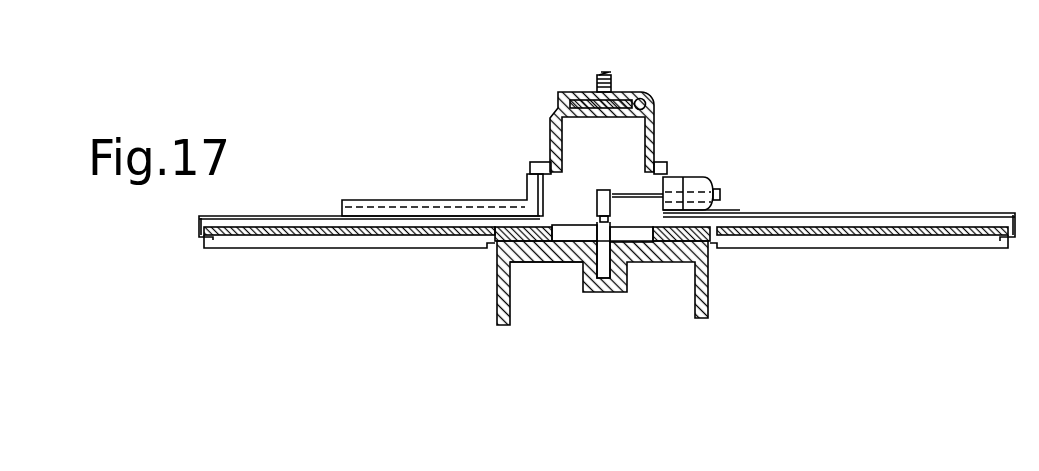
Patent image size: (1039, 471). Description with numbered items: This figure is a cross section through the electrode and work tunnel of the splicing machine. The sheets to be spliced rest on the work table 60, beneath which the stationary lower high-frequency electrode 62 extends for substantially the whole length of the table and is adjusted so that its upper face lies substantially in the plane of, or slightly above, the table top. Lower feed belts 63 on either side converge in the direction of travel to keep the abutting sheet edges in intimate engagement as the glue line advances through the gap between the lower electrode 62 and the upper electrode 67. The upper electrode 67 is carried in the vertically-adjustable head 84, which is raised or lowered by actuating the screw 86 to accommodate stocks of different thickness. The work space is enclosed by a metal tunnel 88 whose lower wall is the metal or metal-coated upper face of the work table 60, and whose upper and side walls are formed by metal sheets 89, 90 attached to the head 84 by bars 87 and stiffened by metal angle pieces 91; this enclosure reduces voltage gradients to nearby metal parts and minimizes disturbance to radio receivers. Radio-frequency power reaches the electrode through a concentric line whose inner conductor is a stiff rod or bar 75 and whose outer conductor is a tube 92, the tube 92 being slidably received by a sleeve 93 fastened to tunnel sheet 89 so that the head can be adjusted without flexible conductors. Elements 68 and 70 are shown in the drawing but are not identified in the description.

The work table 60 is at (453, 238).
The lower high-frequency electrode 62 is at (597, 258).
The feed belts 63 is at (500, 275).
The upper electrode 67 is at (562, 262).
The coupling block 68 is at (597, 197).
The hub 70 is at (705, 260).
The stiff rod or bar 75 is at (627, 193).
The vertically-adjustable head 84 is at (655, 138).
The screw 86 is at (612, 81).
The bars 87 is at (535, 163).
The tunnel 88 is at (300, 223).
The metal sheet 89 is at (918, 213).
The metal sheet 90 is at (282, 216).
The metal angle pieces 91 is at (498, 203).
The tube 92 is at (700, 180).
The sleeve 93 is at (677, 180).